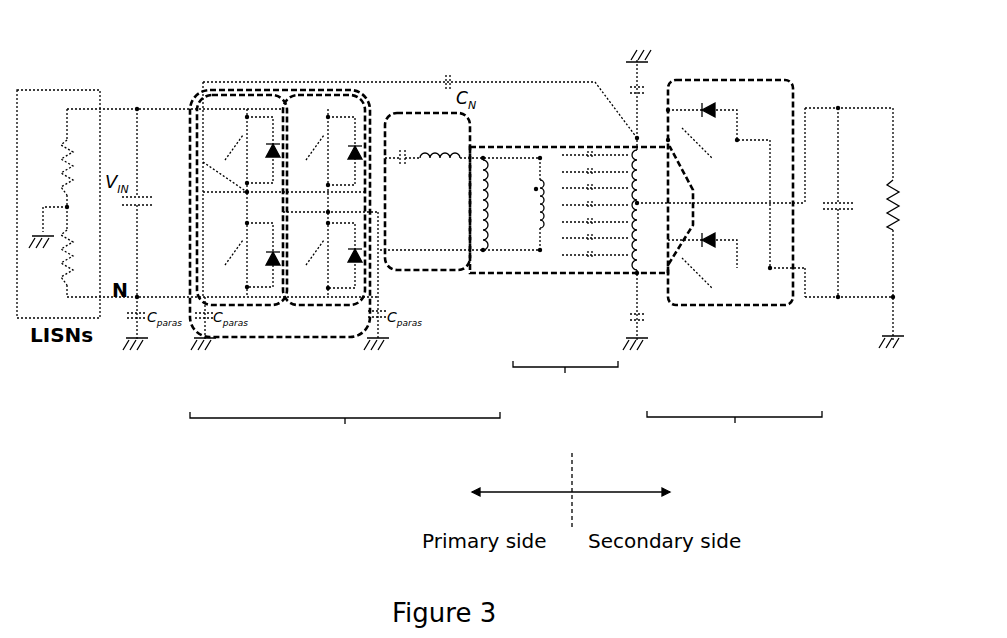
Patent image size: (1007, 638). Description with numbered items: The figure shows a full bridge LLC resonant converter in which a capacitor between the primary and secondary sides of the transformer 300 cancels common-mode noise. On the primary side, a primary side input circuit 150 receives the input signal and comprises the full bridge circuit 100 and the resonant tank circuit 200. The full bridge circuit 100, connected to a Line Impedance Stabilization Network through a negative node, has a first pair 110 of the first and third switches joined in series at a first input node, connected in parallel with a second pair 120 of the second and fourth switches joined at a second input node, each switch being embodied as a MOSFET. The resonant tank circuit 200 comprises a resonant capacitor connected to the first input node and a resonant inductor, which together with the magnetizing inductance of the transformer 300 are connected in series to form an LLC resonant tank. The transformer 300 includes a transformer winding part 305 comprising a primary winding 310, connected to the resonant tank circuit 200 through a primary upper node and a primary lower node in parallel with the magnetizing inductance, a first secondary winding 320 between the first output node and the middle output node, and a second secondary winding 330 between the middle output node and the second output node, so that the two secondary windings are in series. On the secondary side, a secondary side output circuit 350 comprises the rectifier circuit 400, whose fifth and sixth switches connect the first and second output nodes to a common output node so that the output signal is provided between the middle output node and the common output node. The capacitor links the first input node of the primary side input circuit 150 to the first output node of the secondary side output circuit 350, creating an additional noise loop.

The full bridge circuit 100 is at (284, 215).
The first pair 110 is at (255, 92).
The second pair 120 is at (322, 92).
The primary side input circuit 150 is at (345, 440).
The resonant tank circuit 200 is at (420, 112).
The transformer 300 is at (581, 190).
The transformer winding part 305 is at (565, 384).
The primary winding 310 is at (531, 220).
The first secondary winding 320 is at (630, 175).
The second secondary winding 330 is at (623, 250).
The secondary side output circuit 350 is at (734, 441).
The rectifier circuit 400 is at (762, 309).